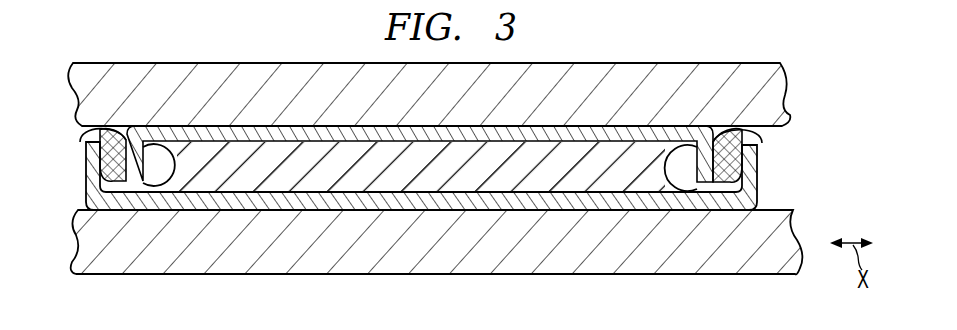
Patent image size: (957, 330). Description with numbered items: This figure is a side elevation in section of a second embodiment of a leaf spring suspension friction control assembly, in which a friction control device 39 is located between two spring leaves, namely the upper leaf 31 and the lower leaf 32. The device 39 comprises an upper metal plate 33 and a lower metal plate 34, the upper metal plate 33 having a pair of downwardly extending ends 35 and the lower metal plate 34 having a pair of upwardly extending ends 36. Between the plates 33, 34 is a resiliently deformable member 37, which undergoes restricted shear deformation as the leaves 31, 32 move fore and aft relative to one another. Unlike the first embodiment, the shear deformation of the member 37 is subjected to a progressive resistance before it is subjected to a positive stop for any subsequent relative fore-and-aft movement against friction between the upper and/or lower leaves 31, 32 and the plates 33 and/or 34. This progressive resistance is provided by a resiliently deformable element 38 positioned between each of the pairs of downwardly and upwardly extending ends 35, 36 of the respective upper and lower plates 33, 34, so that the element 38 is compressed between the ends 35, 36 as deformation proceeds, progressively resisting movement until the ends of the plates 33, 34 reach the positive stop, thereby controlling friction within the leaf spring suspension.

The upper leaf 31 is at (592, 63).
The lower leaf 32 is at (690, 276).
The upper metal plate 33 is at (250, 127).
The lower metal plate 34 is at (223, 200).
The downwardly extending end 35 is at (112, 128).
The upwardly extending end 36 is at (86, 186).
The resiliently deformable member 37 is at (428, 183).
The resiliently deformable element 38 is at (80, 141).
The friction control device 39 is at (824, 182).